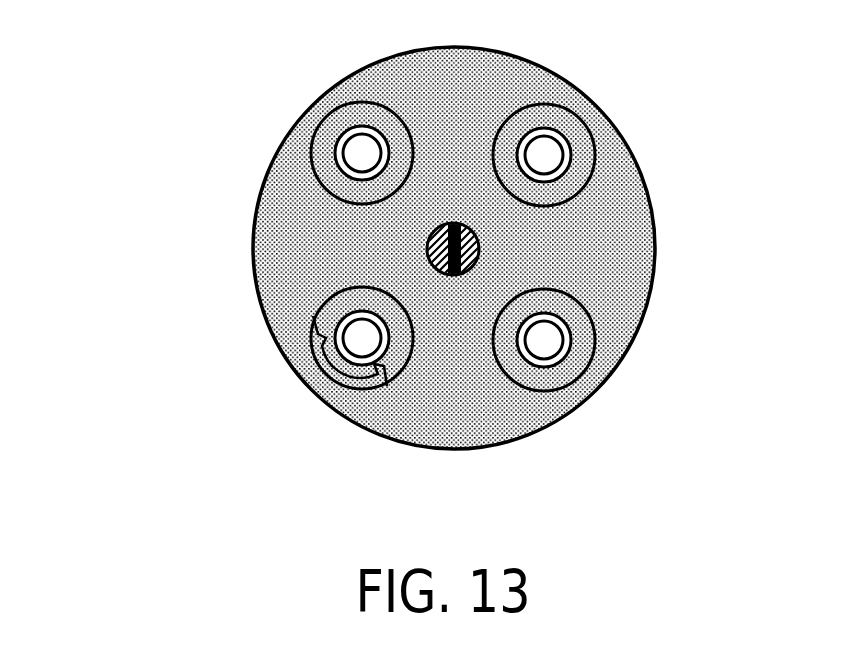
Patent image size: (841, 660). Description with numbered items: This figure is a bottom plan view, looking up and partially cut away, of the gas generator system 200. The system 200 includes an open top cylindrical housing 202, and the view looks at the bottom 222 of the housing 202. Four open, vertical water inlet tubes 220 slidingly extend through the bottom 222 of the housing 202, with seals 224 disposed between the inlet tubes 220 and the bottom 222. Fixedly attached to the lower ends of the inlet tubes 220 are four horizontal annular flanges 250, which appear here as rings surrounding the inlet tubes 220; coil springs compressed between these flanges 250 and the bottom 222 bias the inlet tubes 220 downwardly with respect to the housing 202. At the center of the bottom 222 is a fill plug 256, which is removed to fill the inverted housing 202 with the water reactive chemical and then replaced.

The system 200 is at (400, 258).
The housing 202 is at (651, 200).
The water inlet tubes 220 is at (340, 138).
The bottom 222 is at (455, 436).
The seals 224 is at (323, 357).
The annular flanges 250 is at (348, 118).
The fill plug 256 is at (479, 252).